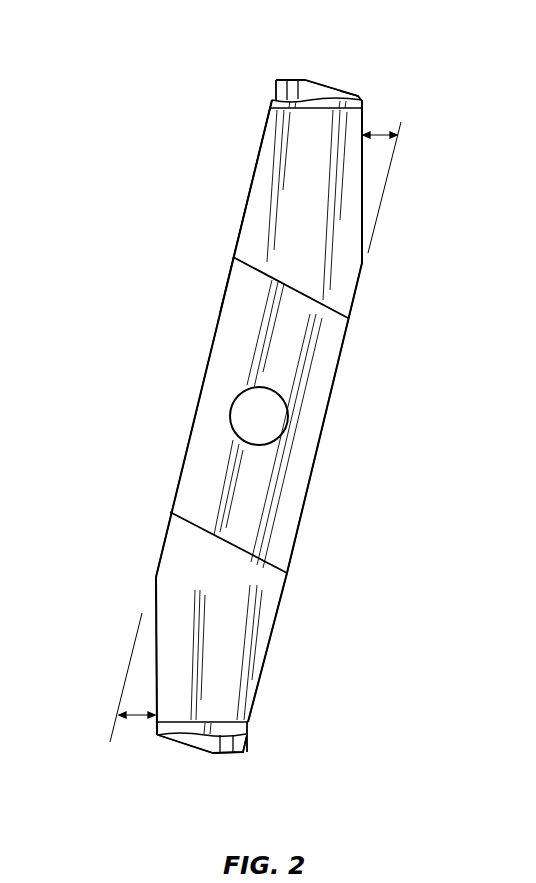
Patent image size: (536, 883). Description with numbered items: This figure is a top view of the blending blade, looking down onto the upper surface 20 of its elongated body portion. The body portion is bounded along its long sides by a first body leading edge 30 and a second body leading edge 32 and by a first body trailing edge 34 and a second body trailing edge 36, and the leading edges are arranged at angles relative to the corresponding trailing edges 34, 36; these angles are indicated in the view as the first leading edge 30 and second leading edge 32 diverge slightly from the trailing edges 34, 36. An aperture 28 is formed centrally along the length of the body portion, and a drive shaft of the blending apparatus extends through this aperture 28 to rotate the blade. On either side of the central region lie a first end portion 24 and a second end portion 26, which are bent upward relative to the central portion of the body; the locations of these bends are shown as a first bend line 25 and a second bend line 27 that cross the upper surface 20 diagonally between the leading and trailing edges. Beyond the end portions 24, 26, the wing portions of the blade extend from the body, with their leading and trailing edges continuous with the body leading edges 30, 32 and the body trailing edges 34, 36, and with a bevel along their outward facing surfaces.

The upper surface 20 is at (256, 498).
The first end portion 24 is at (259, 147).
The first bend line 25 is at (278, 281).
The second end portion 26 is at (262, 688).
The second bend line 27 is at (225, 543).
The aperture 28 is at (284, 394).
The first body leading edge 30 is at (363, 176).
The second body leading edge 32 is at (152, 606).
The first body trailing edge 34 is at (250, 187).
The second body trailing edge 36 is at (273, 633).